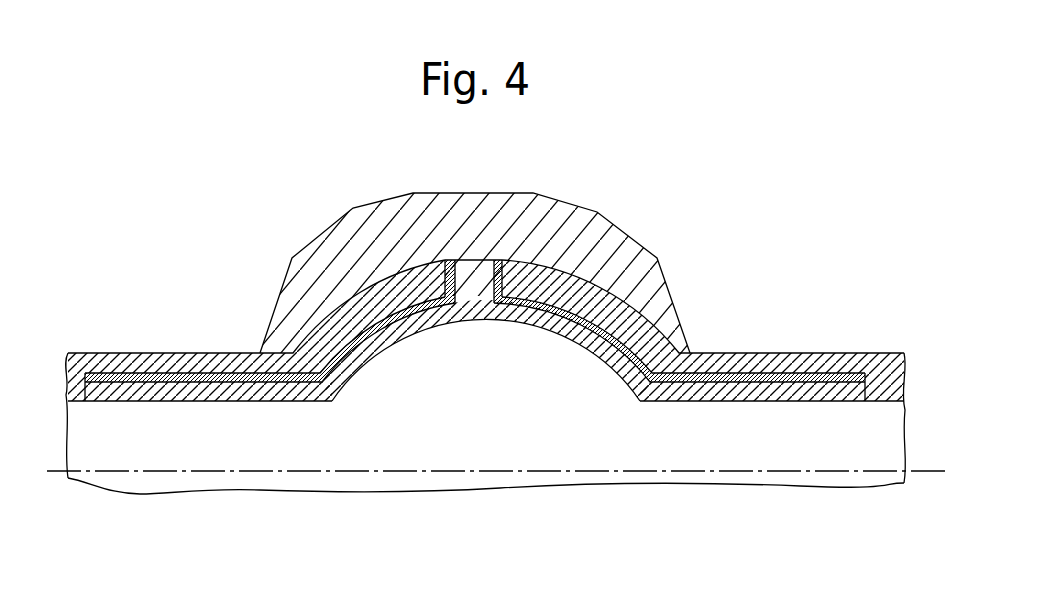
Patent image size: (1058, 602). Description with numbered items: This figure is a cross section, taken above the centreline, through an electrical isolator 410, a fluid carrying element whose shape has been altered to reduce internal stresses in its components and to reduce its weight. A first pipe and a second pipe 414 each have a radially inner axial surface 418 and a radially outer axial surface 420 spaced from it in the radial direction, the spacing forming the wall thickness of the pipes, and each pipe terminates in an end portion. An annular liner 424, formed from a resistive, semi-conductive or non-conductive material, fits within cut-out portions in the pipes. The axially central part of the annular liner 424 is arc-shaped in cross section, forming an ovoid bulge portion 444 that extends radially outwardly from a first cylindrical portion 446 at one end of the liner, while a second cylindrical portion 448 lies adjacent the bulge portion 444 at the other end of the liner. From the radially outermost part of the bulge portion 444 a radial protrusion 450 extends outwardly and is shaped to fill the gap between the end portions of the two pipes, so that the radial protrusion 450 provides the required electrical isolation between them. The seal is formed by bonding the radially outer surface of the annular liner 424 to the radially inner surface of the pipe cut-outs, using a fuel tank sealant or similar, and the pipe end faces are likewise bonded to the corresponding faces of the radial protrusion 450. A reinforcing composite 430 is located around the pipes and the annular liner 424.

The electrical isolator 410 is at (495, 328).
The second pipe 414 is at (74, 385).
The radially inner axial surface 418 is at (893, 401).
The radially outer axial surface 420 is at (176, 352).
The annular liner 424 is at (686, 401).
The reinforcing composite 430 is at (600, 255).
The bulge portion 444 is at (395, 340).
The first cylindrical portion 446 is at (142, 402).
The second cylindrical portion 448 is at (755, 401).
The radial protrusion 450 is at (478, 273).